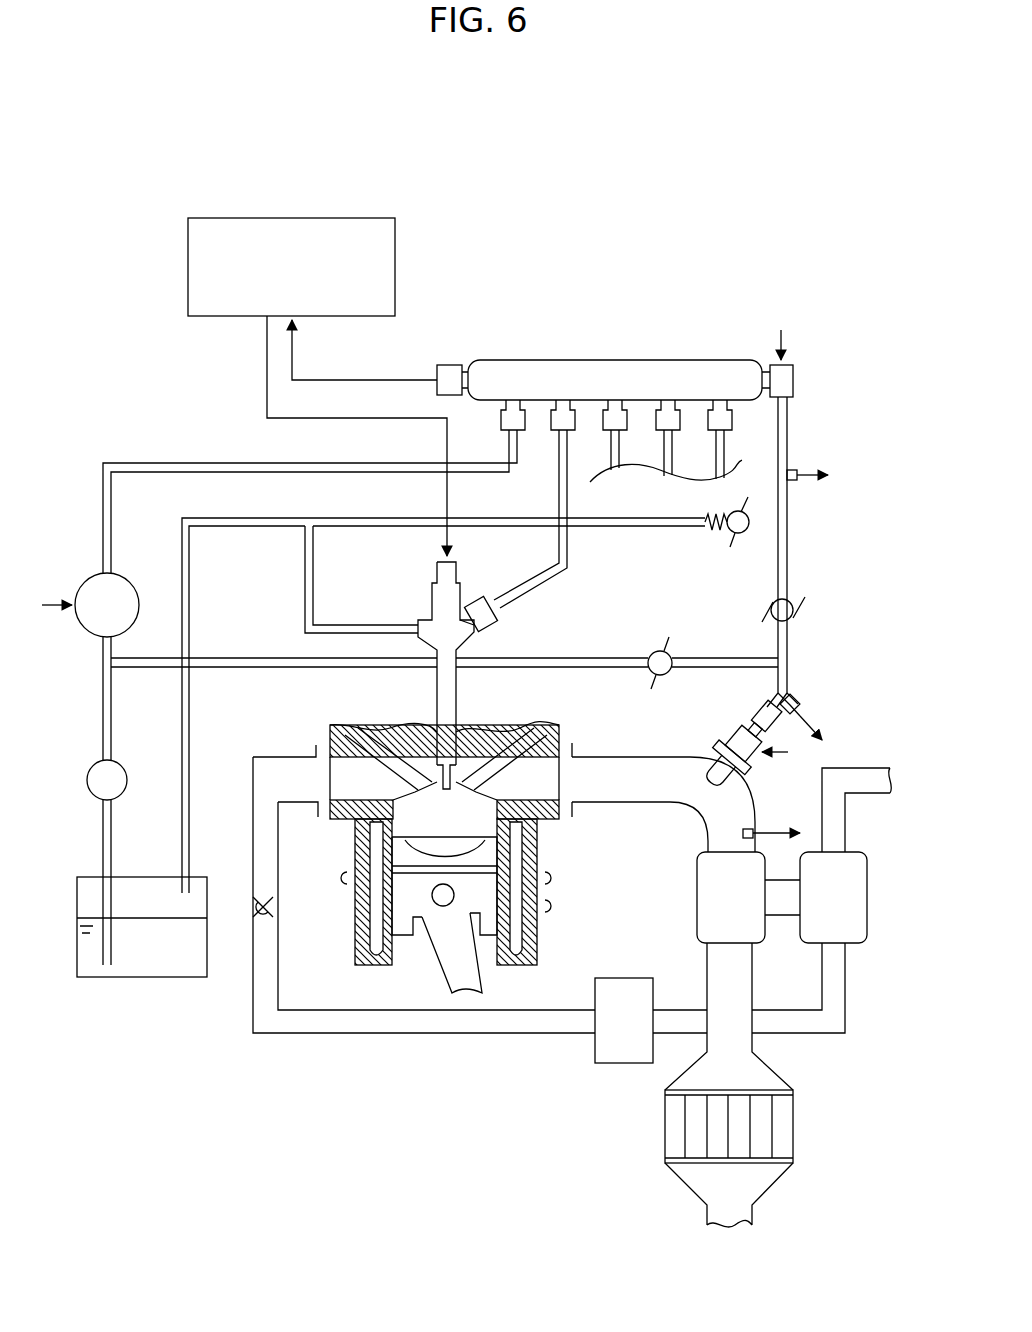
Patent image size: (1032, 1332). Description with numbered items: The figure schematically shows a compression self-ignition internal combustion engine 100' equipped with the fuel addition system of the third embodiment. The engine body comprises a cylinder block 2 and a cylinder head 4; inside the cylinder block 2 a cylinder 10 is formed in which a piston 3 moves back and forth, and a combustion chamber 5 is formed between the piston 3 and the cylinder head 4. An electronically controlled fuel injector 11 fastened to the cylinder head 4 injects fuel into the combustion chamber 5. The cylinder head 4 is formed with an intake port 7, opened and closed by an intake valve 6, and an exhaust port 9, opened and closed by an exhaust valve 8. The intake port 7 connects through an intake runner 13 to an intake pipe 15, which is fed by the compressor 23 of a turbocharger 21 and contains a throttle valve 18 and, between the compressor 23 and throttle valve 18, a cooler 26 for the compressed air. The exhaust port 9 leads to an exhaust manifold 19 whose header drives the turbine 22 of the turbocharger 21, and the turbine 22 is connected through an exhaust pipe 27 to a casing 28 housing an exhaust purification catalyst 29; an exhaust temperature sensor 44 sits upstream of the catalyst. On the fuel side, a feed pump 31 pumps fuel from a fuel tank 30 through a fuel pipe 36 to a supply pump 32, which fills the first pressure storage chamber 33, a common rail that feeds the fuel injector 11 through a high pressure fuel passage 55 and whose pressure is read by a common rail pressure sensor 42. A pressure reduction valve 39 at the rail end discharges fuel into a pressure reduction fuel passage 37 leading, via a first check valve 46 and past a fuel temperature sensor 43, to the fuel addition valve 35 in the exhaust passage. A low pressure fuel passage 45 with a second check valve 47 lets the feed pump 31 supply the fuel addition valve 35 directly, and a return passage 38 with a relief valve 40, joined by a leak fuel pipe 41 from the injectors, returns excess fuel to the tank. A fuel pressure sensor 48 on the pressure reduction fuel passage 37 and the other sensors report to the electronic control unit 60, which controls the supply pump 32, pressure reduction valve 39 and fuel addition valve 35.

The internal combustion engine 100' is at (780, 221).
The electronic control unit 60 is at (352, 218).
The first pressure storage chamber 33 is at (648, 360).
The common rail pressure sensor 42 is at (447, 365).
The pressure reduction valve 39 is at (788, 365).
The fuel pipe 36 is at (157, 463).
The supply pump 32 is at (135, 585).
The feed pump 31 is at (130, 792).
The fuel tank 30 is at (172, 977).
The return passage 38 is at (247, 527).
The leak fuel pipe 41 is at (340, 623).
The relief valve 40 is at (746, 500).
The pressure reduction fuel passage 37 is at (790, 538).
The fuel pressure sensor 48 is at (800, 470).
The first check valve 46 is at (800, 600).
The low pressure fuel passage 45 is at (310, 667).
The second check valve 47 is at (662, 640).
The fuel temperature sensor 43 is at (792, 700).
The fuel addition valve 35 is at (740, 730).
The fuel injector 11 is at (432, 600).
The high pressure fuel passage 55 is at (558, 583).
The cylinder head 4 is at (330, 738).
The intake valve 6 is at (400, 730).
The exhaust valve 8 is at (500, 730).
The intake runner 13 is at (290, 780).
The exhaust port 9 is at (565, 795).
The cylinder block 2 is at (538, 858).
The intake port 7 is at (342, 782).
The piston 3 is at (422, 977).
The cylinder 10 is at (485, 980).
The combustion chamber 5 is at (432, 822).
The exhaust manifold 19 is at (620, 757).
The exhaust temperature sensor 44 is at (755, 828).
The turbine 22 is at (697, 900).
The compressor 23 is at (870, 880).
The turbocharger 21 is at (787, 928).
The intake pipe 15 is at (300, 1033).
The throttle valve 18 is at (258, 898).
The cooler 26 is at (605, 1063).
The exhaust pipe 27 is at (707, 968).
The casing 28 is at (793, 1100).
The exhaust purification catalyst 29 is at (760, 1140).